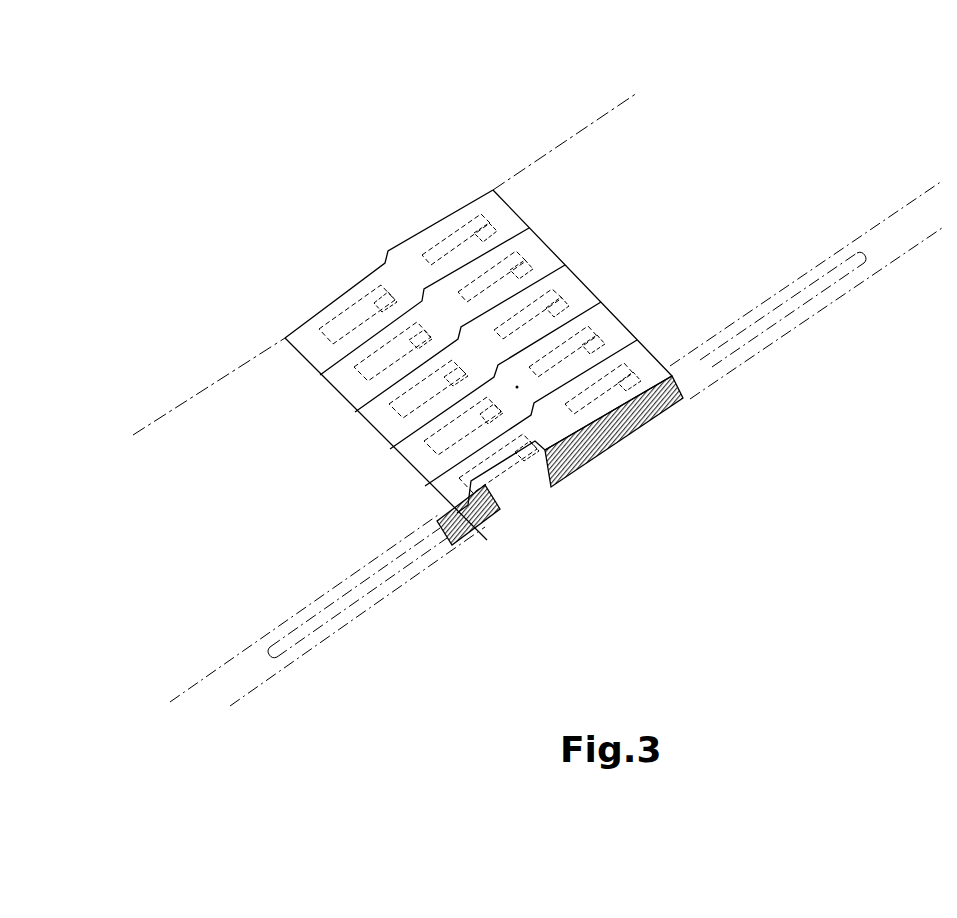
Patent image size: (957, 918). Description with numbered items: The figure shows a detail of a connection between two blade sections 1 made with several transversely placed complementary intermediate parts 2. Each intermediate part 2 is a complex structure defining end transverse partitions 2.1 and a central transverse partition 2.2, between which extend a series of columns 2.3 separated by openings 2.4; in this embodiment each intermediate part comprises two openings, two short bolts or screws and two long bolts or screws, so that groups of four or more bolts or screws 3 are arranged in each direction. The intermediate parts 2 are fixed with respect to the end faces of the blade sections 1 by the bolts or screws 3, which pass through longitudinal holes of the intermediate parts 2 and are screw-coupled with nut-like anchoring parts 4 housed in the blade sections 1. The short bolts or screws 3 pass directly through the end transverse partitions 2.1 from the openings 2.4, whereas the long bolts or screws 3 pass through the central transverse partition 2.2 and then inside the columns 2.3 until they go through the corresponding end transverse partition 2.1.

The blade section 1 is at (208, 452).
The intermediate part 2 is at (460, 322).
The end transverse partition 2.1 is at (383, 427).
The central transverse partition 2.2 is at (517, 387).
The column 2.3 is at (543, 328).
The opening 2.4 is at (423, 407).
The bolt or screw 3 is at (488, 605).
The anchoring part 4 is at (372, 677).